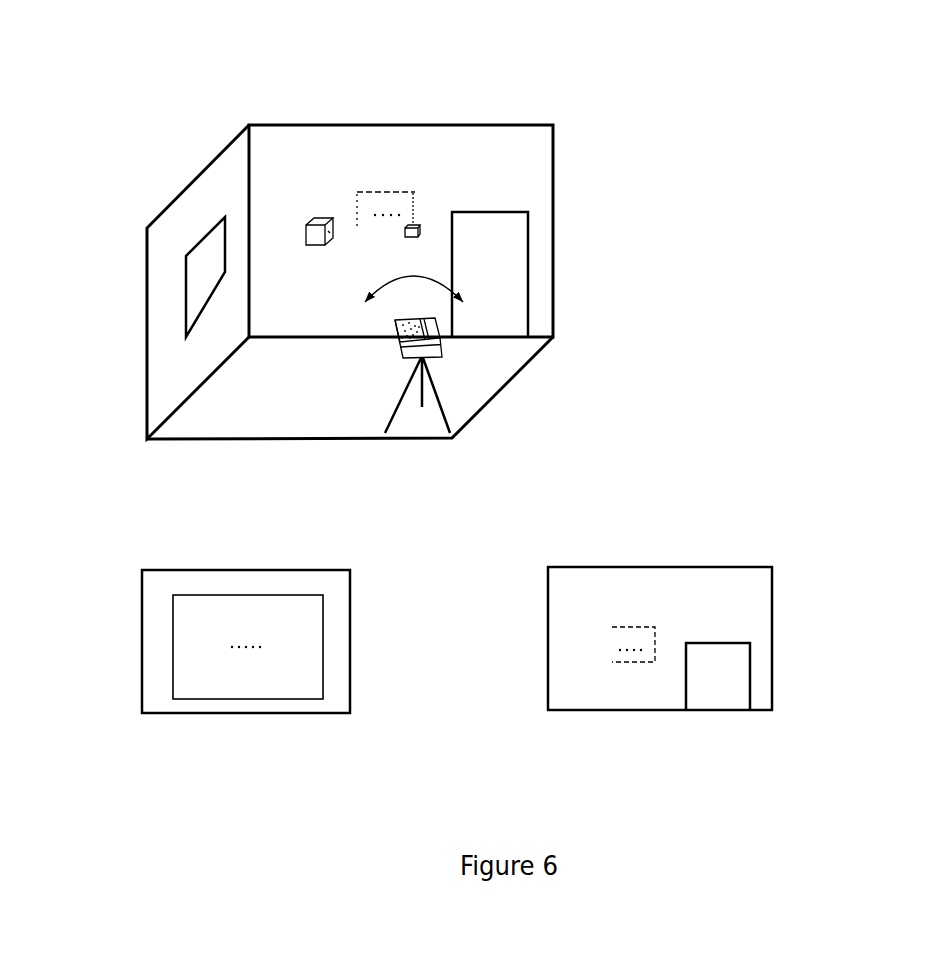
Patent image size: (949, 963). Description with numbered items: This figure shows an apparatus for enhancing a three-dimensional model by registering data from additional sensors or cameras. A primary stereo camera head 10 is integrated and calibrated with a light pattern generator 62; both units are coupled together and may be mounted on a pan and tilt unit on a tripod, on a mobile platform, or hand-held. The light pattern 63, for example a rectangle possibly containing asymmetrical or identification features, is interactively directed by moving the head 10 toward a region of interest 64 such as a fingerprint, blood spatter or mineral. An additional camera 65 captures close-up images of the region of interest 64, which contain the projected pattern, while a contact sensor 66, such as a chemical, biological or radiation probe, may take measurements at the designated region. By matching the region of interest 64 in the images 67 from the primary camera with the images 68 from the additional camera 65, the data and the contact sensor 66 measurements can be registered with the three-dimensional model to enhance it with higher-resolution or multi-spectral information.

The head 10 is at (449, 360).
The light pattern generator 62 is at (444, 328).
The light pattern 63 is at (418, 190).
The region of interest 64 is at (493, 723).
The additional camera 65 is at (305, 218).
The contact sensor 66 is at (424, 233).
The images from the primary camera 67 is at (709, 700).
The images from the additional camera 68 is at (210, 707).